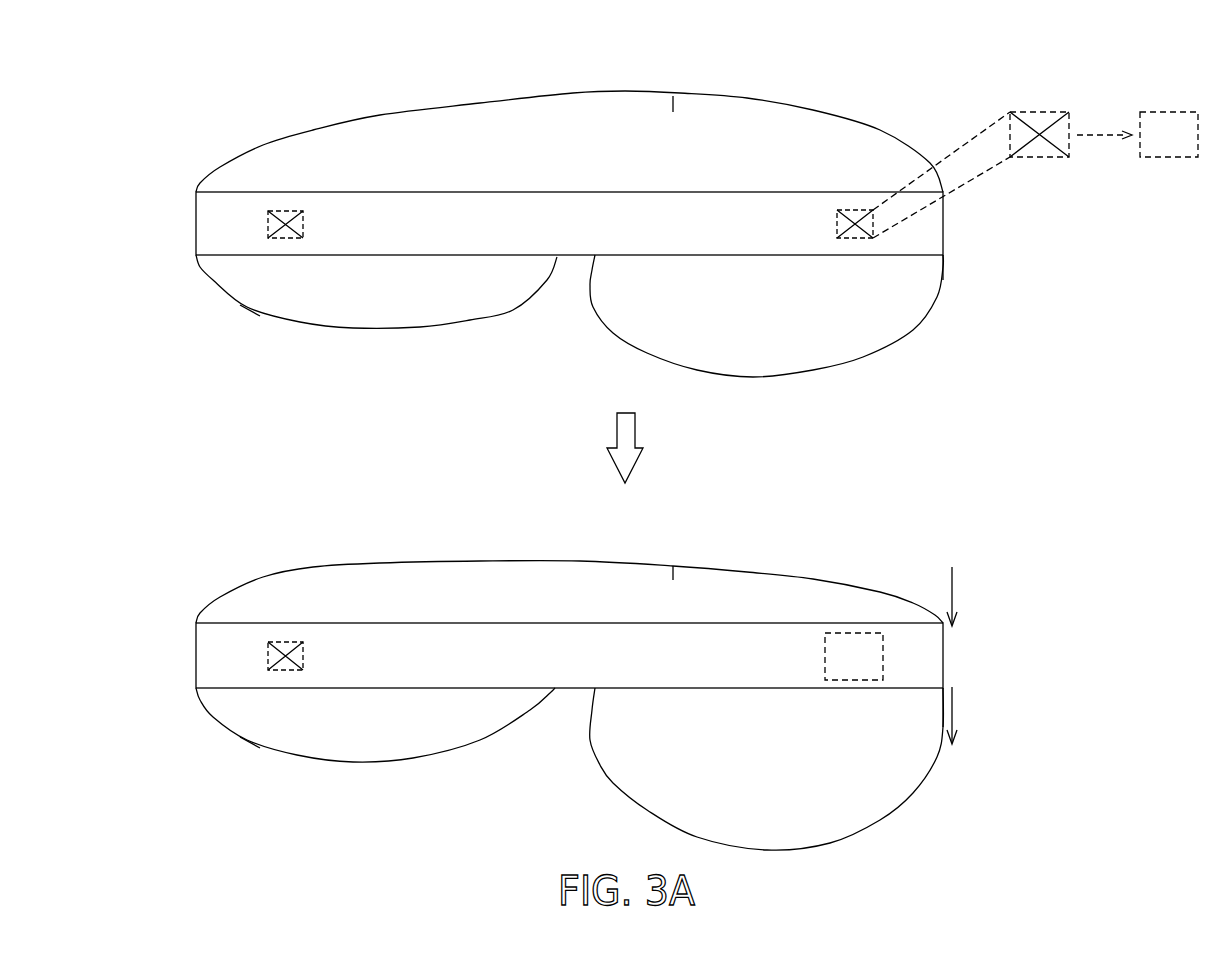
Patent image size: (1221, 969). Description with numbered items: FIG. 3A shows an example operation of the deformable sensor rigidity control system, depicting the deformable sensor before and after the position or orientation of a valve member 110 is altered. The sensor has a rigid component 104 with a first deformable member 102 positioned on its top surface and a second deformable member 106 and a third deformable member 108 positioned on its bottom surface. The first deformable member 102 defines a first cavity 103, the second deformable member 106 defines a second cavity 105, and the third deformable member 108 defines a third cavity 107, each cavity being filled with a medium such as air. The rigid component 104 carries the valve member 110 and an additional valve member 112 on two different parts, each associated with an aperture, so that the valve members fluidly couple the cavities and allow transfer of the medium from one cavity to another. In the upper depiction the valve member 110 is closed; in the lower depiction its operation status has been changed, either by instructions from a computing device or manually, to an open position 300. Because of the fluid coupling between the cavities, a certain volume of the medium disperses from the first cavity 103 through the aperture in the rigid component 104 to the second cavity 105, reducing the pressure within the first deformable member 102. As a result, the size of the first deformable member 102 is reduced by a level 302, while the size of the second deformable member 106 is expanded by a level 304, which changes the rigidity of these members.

The first deformable member 102 is at (570, 93).
The first cavity 103 is at (674, 104).
The rigid component 104 is at (943, 226).
The second cavity 105 is at (878, 343).
The second deformable member 106 is at (943, 280).
The third cavity 107 is at (270, 303).
The third deformable member 108 is at (198, 270).
The valve member 110 is at (853, 239).
The additional valve member 112 is at (294, 208).
The open position 300 is at (1170, 120).
The level 302 is at (955, 592).
The level 304 is at (955, 712).